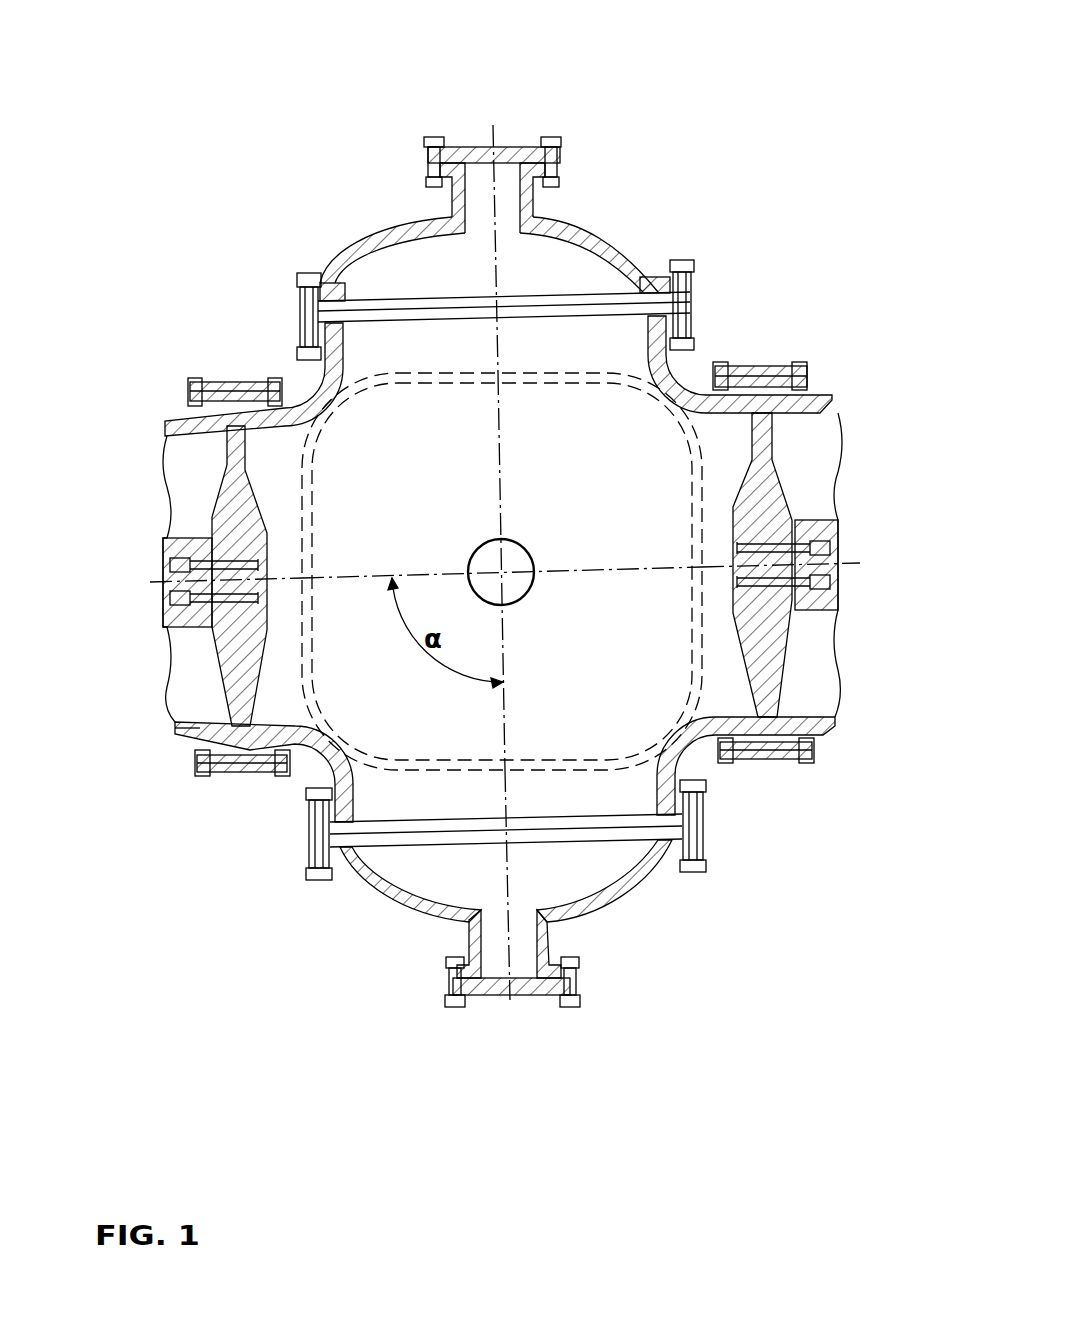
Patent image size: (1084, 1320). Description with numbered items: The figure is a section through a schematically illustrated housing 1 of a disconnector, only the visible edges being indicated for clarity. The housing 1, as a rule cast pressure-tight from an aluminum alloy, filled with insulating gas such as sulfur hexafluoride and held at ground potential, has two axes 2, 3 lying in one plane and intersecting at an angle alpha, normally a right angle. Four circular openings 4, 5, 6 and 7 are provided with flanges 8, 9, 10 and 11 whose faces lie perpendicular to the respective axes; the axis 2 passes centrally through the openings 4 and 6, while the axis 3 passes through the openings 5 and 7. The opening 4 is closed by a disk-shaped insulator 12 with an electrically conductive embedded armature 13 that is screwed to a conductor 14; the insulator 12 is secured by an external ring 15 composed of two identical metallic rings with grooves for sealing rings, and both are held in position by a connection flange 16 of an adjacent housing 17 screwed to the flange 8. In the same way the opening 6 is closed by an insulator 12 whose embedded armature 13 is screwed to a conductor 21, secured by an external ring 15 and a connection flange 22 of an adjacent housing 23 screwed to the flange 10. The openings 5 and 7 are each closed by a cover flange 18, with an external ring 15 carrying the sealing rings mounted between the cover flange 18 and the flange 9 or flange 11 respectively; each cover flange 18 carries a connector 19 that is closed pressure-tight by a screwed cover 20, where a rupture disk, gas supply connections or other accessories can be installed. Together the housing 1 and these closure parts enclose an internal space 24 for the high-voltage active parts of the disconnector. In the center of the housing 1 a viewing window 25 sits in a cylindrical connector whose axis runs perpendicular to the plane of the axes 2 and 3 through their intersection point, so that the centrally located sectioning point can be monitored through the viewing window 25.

The housing 1 is at (931, 931).
The axis 2 is at (578, 567).
The axis 3 is at (500, 453).
The opening 4 is at (226, 514).
The opening 5 is at (554, 249).
The opening 6 is at (781, 631).
The opening 7 is at (443, 885).
The flange 8 is at (172, 322).
The flange 9 is at (619, 291).
The flange 10 is at (789, 790).
The flange 11 is at (305, 800).
The insulator 12 is at (223, 477).
The embedded armature 13 is at (880, 477).
The conductor 14 is at (183, 545).
The external ring 15 is at (692, 296).
The connection flange 16 is at (154, 771).
The adjacent housing 17 is at (213, 749).
The cover flange 18 is at (633, 247).
The connector 19 is at (689, 562).
The cover 20 is at (681, 564).
The conductor 21 is at (840, 530).
The connection flange 22 is at (820, 764).
The adjacent housing 23 is at (542, 567).
The internal space 24 is at (502, 571).
The viewing window 25 is at (517, 588).